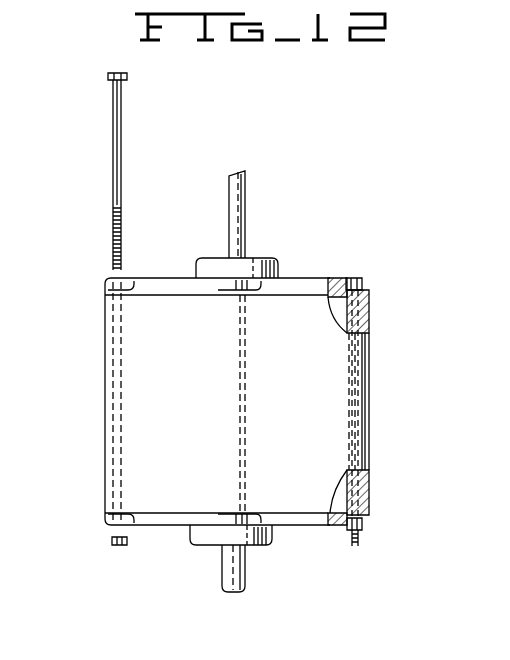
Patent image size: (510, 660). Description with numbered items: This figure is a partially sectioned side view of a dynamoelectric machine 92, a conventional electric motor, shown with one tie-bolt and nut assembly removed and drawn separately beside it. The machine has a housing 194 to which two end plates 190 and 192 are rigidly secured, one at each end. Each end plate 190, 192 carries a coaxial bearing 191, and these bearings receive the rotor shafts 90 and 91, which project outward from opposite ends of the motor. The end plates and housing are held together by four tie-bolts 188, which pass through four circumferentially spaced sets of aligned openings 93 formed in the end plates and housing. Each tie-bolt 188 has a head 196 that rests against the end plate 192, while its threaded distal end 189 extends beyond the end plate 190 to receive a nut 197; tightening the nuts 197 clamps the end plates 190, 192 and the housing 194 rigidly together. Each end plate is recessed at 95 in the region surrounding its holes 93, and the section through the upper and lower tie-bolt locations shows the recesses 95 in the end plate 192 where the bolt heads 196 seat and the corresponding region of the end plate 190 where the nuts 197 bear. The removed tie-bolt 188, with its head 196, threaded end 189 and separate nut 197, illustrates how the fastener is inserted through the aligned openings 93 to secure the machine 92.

The dynamoelectric machine 92 is at (396, 425).
The aligned openings 93 is at (112, 321).
The housing 194 is at (370, 380).
The end plate 192 is at (303, 278).
The recess 95 is at (340, 278).
The tie-bolt head 196 is at (360, 278).
The tie-bolt 188 is at (368, 300).
The nut 197 is at (364, 526).
The threaded distal end 189 is at (360, 542).
The rotor shaft 90 is at (229, 198).
The coaxial bearing 191 is at (250, 268).
The end plate 190 is at (305, 527).
The rotor shaft 91 is at (240, 585).